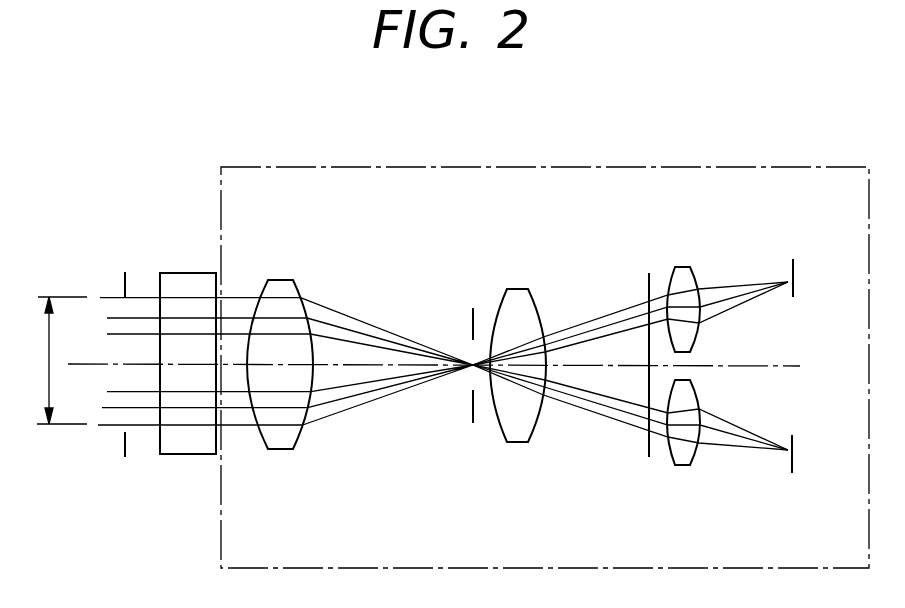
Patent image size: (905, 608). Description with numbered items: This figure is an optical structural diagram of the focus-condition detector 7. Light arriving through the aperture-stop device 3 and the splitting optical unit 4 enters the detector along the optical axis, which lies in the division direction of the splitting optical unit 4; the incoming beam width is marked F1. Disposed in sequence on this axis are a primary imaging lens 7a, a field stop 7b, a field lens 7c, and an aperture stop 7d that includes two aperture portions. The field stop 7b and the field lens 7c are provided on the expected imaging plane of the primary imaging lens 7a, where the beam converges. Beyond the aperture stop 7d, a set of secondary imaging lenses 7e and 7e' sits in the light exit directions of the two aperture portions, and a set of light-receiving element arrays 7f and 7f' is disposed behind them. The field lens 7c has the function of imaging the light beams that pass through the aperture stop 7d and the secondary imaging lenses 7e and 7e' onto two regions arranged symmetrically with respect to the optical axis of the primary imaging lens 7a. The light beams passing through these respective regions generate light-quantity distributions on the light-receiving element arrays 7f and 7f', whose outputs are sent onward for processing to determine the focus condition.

The aperture-stop device 3 is at (125, 272).
The splitting optical unit 4 is at (190, 273).
The focus-condition detector 7 is at (415, 167).
The primary imaging lens 7a is at (283, 280).
The field stop 7b is at (473, 316).
The field lens 7c is at (518, 289).
The aperture stop 7d is at (649, 286).
The secondary imaging lens 7e is at (690, 282).
The secondary imaging lens 7e' is at (691, 452).
The light-receiving element array 7f is at (819, 267).
The light-receiving element array 7f' is at (821, 466).
The light flux F1 is at (50, 360).